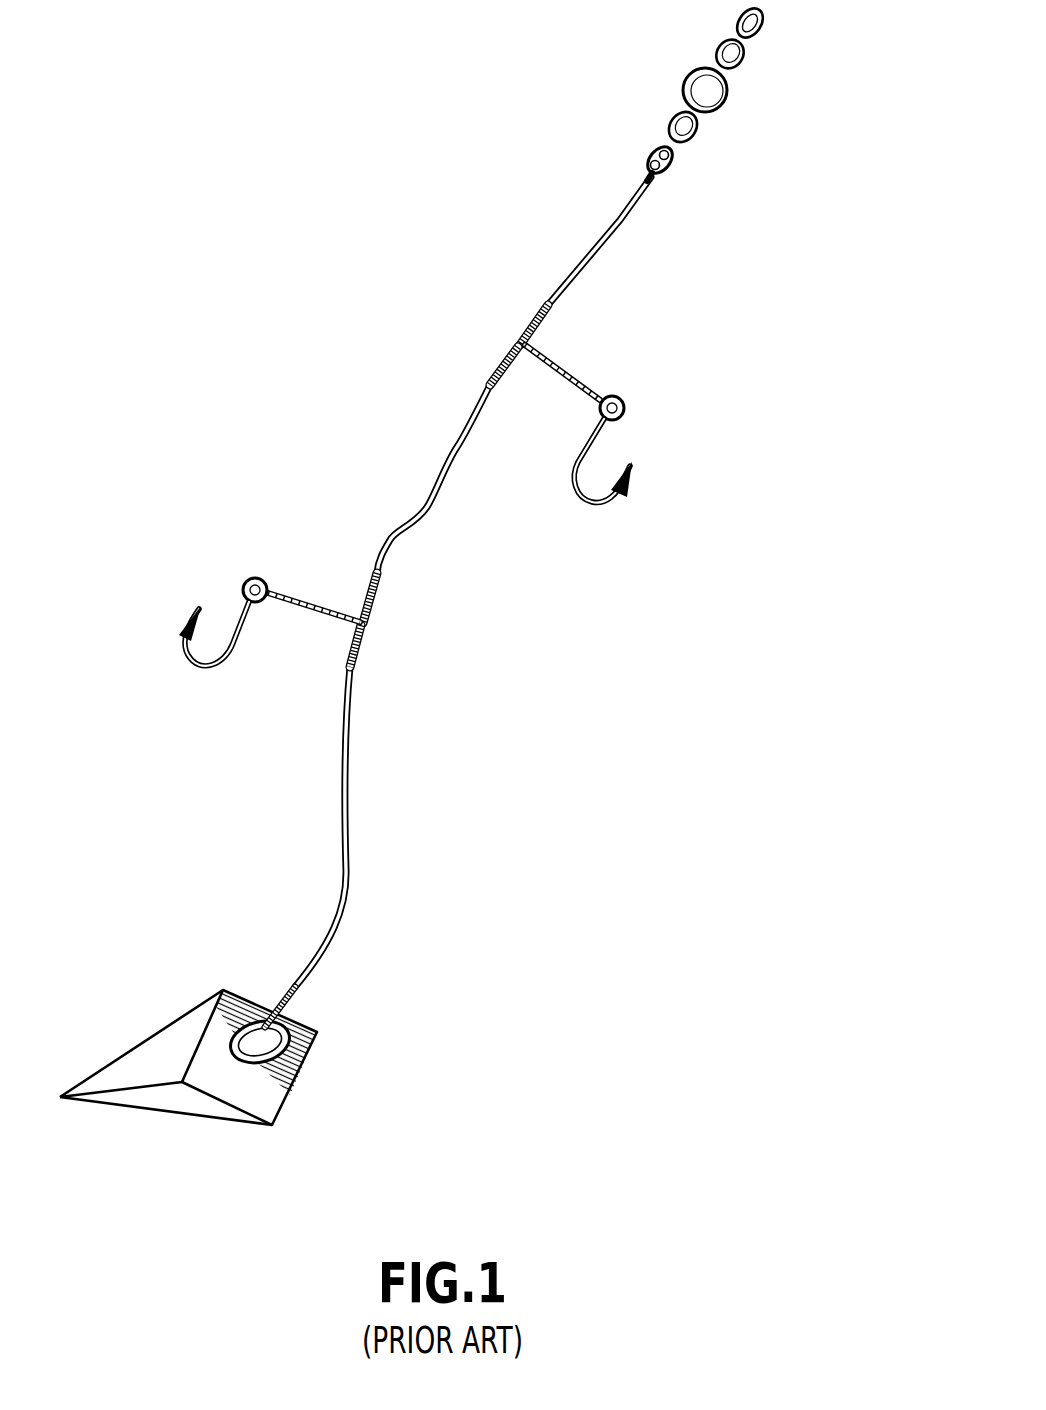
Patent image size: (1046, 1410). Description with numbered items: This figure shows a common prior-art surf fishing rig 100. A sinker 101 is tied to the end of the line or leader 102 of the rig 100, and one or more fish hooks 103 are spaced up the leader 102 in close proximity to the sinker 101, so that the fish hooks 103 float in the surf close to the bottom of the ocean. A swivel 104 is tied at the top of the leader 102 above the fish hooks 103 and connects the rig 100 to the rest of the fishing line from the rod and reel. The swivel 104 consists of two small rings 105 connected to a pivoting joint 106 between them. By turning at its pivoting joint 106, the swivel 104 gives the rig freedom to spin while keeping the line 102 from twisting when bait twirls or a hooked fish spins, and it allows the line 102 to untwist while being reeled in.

The surf fishing rig 100 is at (314, 256).
The sinker 101 is at (123, 1098).
The leader 102 is at (350, 806).
The fish hooks 103 is at (595, 503).
The swivel 104 is at (736, 170).
The small rings 105 is at (740, 12).
The pivoting joint 106 is at (735, 98).